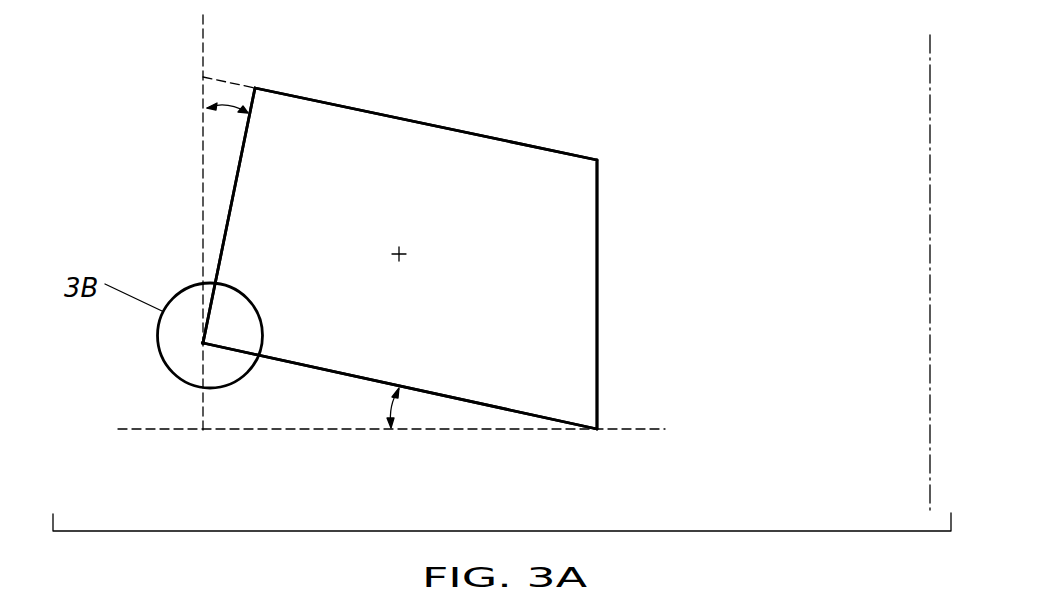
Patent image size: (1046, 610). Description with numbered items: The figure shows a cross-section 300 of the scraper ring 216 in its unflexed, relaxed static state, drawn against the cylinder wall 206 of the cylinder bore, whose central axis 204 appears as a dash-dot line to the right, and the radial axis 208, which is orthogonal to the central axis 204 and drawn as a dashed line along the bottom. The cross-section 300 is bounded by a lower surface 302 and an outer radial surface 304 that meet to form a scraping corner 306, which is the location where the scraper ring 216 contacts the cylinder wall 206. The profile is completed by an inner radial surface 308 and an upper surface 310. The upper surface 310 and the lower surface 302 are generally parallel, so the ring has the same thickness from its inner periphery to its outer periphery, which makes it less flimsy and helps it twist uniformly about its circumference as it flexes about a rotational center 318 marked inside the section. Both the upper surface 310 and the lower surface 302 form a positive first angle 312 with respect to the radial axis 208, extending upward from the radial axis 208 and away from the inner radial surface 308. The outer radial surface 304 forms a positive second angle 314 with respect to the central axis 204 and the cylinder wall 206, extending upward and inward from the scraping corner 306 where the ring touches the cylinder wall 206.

The cross-section 300 is at (638, 99).
The upper surface 310 is at (418, 120).
The outer radial surface 304 is at (232, 190).
The inner radial surface 308 is at (597, 352).
The lower surface 302 is at (283, 365).
The scraping corner 306 is at (203, 345).
The scraper ring 216 is at (575, 272).
The rotational center 318 is at (401, 250).
The cylinder wall 206 is at (203, 57).
The radial axis 208 is at (512, 430).
The central axis 204 is at (930, 290).
The second angle 314 is at (222, 107).
The first angle 312 is at (388, 404).